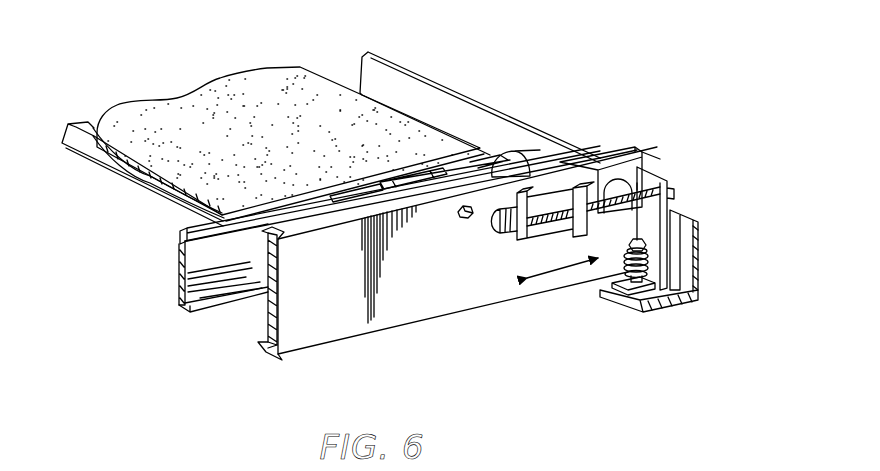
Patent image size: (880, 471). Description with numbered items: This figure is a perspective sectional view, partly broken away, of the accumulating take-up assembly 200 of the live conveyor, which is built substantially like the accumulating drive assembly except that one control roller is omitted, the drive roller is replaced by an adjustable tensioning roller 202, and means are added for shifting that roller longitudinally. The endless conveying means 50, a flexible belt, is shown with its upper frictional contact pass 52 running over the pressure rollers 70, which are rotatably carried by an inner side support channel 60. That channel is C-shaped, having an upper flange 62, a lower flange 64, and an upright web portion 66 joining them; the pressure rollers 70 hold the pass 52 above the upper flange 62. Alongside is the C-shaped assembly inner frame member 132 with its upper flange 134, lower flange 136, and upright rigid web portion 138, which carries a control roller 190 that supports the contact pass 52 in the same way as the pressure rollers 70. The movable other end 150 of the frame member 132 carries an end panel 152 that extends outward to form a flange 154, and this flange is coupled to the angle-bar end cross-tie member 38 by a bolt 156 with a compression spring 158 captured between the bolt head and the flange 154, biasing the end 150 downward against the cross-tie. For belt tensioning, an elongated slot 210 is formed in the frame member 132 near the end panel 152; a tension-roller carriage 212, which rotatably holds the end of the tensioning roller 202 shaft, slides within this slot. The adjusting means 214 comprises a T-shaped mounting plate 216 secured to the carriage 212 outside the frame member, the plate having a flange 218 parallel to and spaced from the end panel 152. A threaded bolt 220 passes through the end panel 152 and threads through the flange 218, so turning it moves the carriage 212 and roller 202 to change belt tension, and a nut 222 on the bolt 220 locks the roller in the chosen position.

The accumulating take-up assembly 200 is at (209, 65).
The upper frictional contact pass 52 is at (246, 90).
The endless conveying means 50 is at (293, 68).
The pressure rollers 70 is at (178, 196).
The tensioning roller 202 is at (495, 162).
The control roller 190 is at (418, 182).
The upper flange 62 is at (188, 236).
The inner side support channel 60 is at (177, 283).
The upright web portion 66 is at (188, 269).
The lower flange 64 is at (190, 314).
The assembly inner frame member 132 is at (307, 354).
The upright rigid web portion 138 is at (275, 314).
The upper flange 134 is at (266, 240).
The lower flange 136 is at (266, 351).
The end panel 152 is at (560, 152).
The means for adjusting the longitudinal position of the tension roller 214 is at (572, 165).
The flange 218 is at (575, 243).
The mounting plate 216 is at (521, 240).
The tension-roller carriage 212 is at (500, 229).
The nut 222 is at (615, 195).
The elongated slot 210 is at (644, 180).
The threaded bolt 220 is at (661, 186).
The bolt 156 is at (638, 242).
The compression spring 158 is at (646, 259).
The flange 154 is at (641, 291).
The end cross-tie member 38 is at (680, 304).
The other end of assembly inner frame member 150 is at (571, 279).